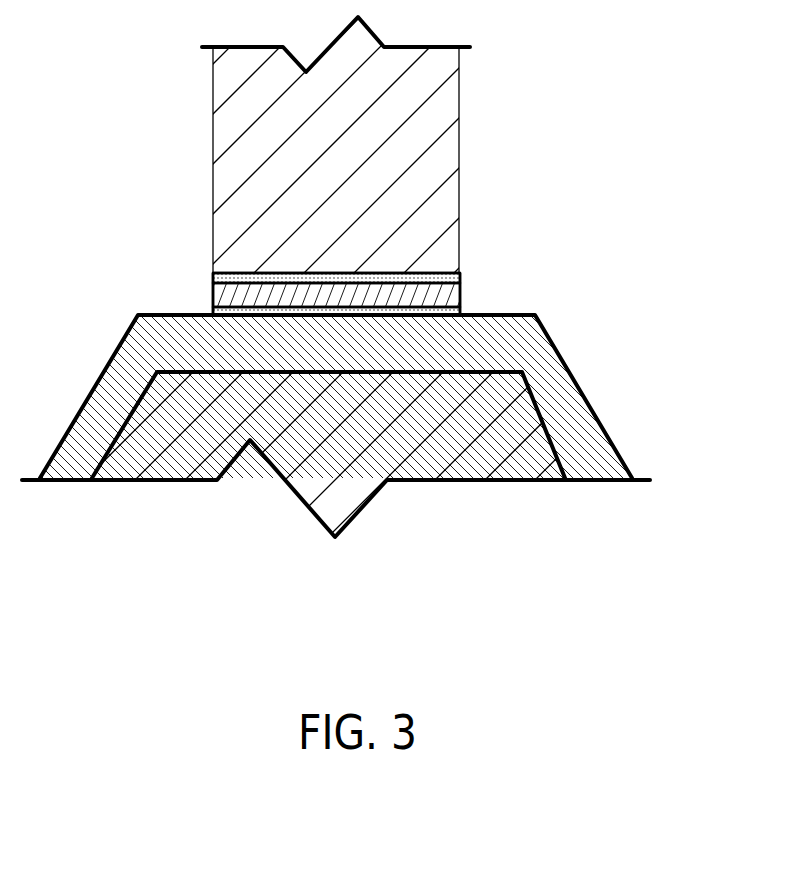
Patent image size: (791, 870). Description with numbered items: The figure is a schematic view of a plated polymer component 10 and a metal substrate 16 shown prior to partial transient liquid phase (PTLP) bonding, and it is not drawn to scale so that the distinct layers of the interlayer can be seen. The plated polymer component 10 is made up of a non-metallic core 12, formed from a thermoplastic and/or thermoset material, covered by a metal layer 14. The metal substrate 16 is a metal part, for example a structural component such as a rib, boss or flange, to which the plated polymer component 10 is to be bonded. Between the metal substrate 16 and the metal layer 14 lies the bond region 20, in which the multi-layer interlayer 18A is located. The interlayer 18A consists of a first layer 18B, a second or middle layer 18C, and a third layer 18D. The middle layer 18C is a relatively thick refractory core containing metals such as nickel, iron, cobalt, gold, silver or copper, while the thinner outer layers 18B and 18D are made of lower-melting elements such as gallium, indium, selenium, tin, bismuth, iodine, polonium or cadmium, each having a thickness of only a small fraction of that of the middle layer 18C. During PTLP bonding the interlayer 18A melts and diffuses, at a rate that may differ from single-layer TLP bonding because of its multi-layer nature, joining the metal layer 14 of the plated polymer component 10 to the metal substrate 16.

The plated polymer component 10 is at (636, 399).
The non-metallic core 12 is at (497, 443).
The metal layer 14 is at (530, 338).
The metal substrate 16 is at (430, 173).
The interlayer 18A is at (208, 275).
The first layer 18B is at (462, 277).
The second (middle) layer 18C is at (462, 297).
The third layer 18D is at (462, 312).
The bond region 20 is at (170, 262).